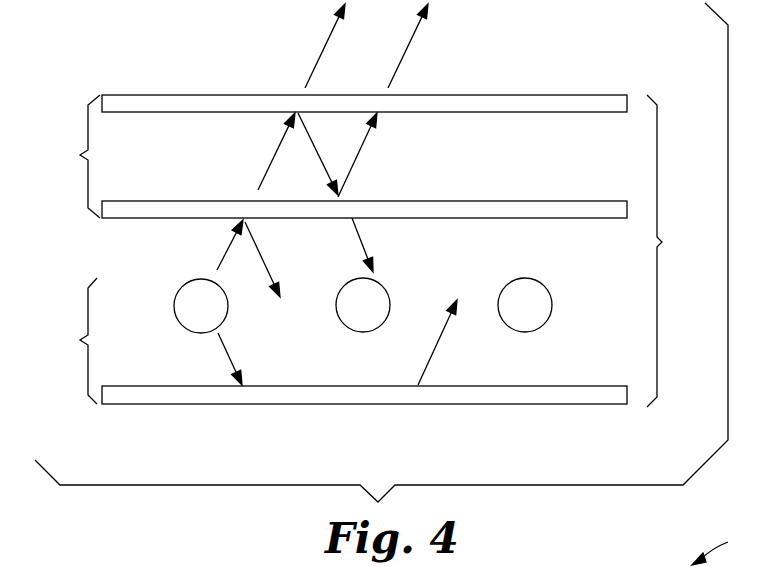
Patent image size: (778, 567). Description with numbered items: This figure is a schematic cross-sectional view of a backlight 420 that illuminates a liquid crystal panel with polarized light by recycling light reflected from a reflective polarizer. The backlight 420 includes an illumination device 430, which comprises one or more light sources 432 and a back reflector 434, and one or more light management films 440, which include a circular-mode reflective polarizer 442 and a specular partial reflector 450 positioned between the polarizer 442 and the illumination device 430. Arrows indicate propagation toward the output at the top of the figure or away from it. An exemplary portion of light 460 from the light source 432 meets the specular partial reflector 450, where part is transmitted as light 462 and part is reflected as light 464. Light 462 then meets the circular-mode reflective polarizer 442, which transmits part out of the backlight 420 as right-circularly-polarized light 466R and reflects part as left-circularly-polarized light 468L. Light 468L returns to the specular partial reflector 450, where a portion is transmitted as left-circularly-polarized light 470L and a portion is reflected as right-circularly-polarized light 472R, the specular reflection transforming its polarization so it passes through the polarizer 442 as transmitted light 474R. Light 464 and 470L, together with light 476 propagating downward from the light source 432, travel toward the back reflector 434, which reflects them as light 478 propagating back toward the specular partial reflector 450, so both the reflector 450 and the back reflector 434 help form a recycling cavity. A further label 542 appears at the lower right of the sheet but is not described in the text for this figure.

The backlight 420 is at (678, 251).
The illumination device 430 is at (66, 341).
The light source 432 is at (188, 317).
The back reflector 434 is at (138, 397).
The light management films 440 is at (67, 156).
The circular-mode reflective polarizer 442 is at (610, 103).
The specular partial reflector 450 is at (610, 200).
The light 460 is at (227, 252).
The light 462 is at (272, 160).
The light 464 is at (257, 250).
The right-circularly-polarized light 466R is at (325, 50).
The left-circularly-polarized light 468L is at (312, 147).
The left-circularly-polarized light 470L is at (360, 243).
The right-circularly-polarized light 472R is at (358, 158).
The transmitted light 474R is at (407, 50).
The light 476 is at (228, 347).
The light 478 is at (427, 358).
The light redirecting layer 542 is at (733, 548).